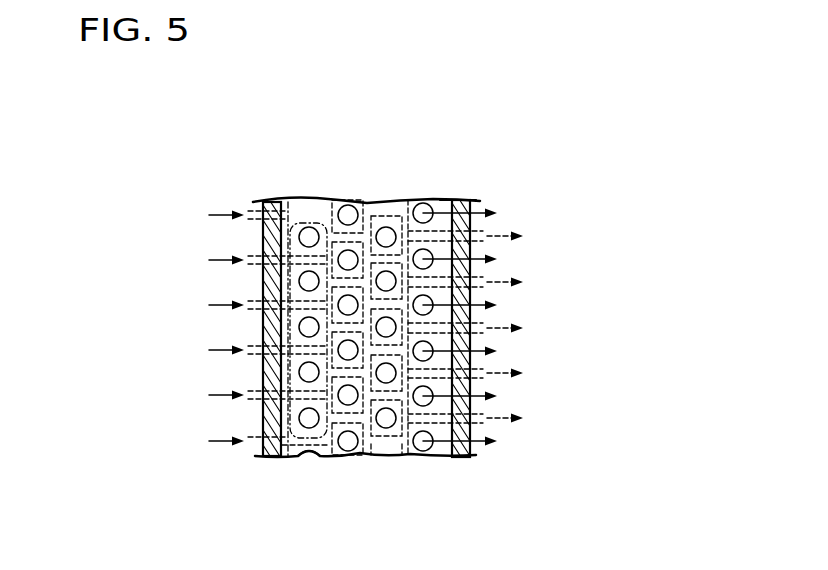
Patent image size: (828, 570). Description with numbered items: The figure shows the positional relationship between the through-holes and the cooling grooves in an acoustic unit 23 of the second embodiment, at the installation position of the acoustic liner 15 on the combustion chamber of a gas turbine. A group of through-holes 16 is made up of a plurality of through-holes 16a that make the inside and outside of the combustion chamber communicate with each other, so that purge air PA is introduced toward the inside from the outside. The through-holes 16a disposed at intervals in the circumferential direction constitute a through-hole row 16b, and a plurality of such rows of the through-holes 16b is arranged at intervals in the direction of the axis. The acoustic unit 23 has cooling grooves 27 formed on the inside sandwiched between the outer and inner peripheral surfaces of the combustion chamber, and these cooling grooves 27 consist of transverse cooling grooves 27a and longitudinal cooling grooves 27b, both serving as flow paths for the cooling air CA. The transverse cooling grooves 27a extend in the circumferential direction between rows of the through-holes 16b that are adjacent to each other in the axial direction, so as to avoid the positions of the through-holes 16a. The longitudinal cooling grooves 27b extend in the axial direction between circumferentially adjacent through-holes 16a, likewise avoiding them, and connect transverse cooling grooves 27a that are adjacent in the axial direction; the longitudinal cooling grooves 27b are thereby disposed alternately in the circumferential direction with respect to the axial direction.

The acoustic unit 23 is at (596, 186).
The group of through-holes 16 is at (350, 121).
The through-holes 16a is at (322, 230).
The through-hole row 16b is at (281, 215).
The cooling grooves 27 is at (553, 142).
The transverse cooling grooves 27a is at (403, 220).
The longitudinal cooling grooves 27b is at (472, 236).
The acoustic liner 15 is at (293, 458).
The cooling air CA is at (240, 443).
The purge air PA is at (479, 447).